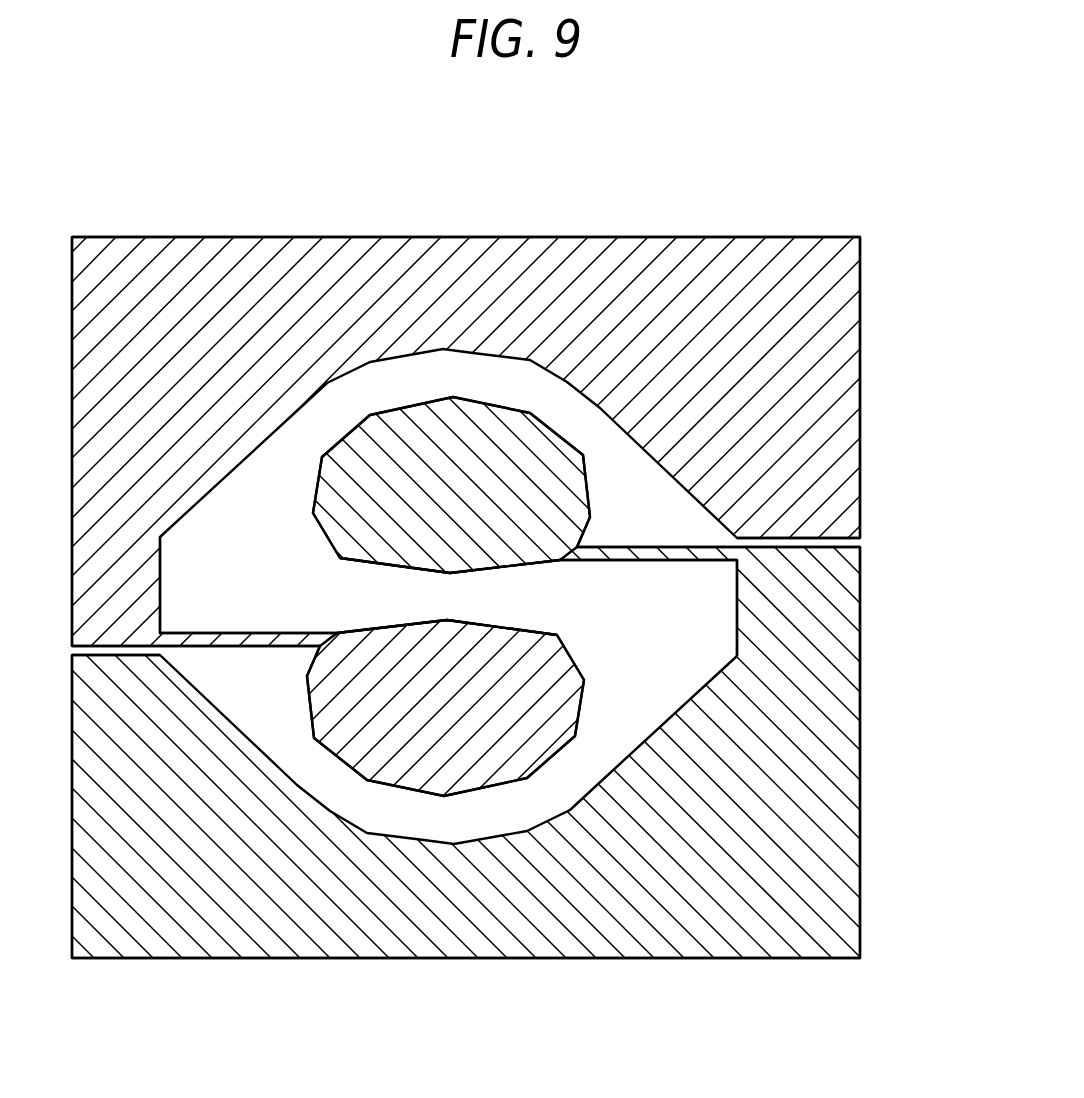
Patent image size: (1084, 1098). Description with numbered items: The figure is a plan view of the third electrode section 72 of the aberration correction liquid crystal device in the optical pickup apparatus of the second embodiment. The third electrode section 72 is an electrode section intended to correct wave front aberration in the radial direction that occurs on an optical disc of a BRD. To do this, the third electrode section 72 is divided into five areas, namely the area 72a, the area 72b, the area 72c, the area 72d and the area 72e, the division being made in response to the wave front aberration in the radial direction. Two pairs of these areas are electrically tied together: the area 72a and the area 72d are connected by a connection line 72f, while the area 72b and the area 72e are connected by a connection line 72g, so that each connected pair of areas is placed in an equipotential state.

The third electrode section 72 is at (631, 233).
The area 72a is at (842, 358).
The area 72b is at (525, 473).
The area 72c is at (700, 598).
The area 72d is at (548, 722).
The area 72e is at (800, 641).
The connection line 72f is at (663, 548).
The connection line 72g is at (237, 633).